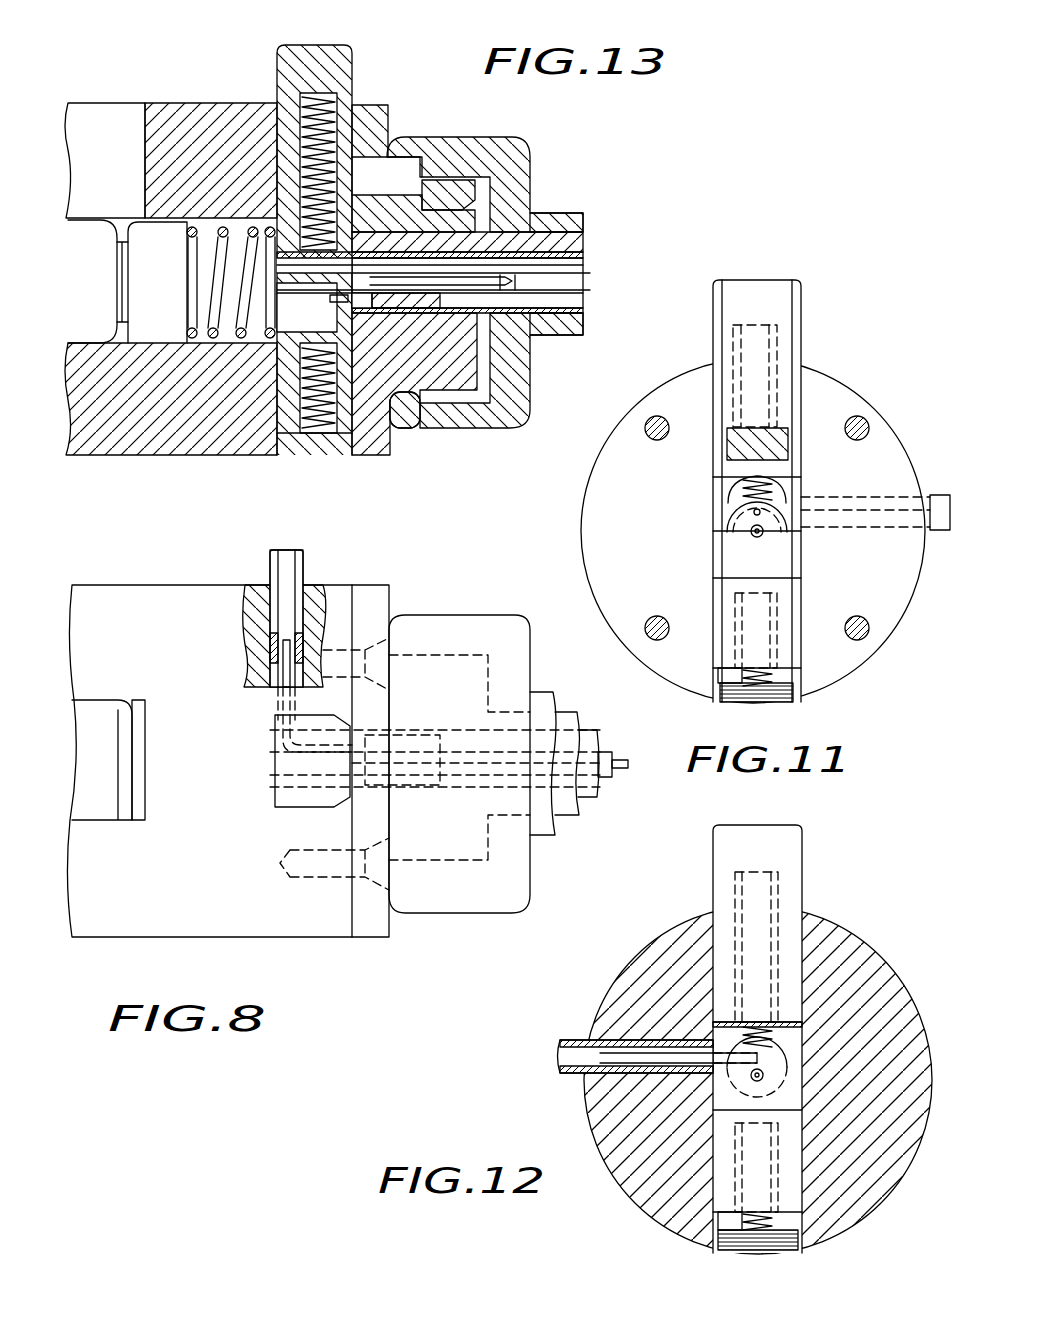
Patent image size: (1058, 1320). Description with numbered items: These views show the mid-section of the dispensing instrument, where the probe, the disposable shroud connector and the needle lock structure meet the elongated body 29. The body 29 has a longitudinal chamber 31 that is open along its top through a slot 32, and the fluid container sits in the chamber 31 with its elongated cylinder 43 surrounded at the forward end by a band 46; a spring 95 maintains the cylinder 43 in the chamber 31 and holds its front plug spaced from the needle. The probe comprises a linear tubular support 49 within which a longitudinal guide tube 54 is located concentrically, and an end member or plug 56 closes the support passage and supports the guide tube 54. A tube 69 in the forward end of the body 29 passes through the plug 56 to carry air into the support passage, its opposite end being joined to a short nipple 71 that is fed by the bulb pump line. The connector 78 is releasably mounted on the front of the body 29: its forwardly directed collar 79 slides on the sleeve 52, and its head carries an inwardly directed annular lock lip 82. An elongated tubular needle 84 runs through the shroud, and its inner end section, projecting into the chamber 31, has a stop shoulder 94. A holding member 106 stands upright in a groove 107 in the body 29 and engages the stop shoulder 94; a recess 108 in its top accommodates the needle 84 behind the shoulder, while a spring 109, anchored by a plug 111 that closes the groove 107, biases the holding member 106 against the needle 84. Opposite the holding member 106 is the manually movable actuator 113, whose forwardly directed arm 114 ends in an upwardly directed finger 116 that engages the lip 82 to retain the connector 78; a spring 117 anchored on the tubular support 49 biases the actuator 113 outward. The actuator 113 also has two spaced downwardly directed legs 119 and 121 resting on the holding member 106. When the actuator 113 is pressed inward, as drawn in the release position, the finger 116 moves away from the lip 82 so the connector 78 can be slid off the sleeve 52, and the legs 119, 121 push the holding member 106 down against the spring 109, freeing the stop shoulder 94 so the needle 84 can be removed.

In FIG. 13, the elongated body 29 is at (132, 440).
In FIG. 11, the elongated body 29 is at (882, 612).
In FIG. 8, the elongated body 29 is at (115, 598).
In FIG. 12, the elongated body 29 is at (868, 1193).
In FIG. 13, the longitudinal chamber 31 is at (120, 228).
In FIG. 13, the slot 32 is at (95, 115).
In FIG. 13, the elongated cylinder 43 is at (80, 275).
In FIG. 8, the elongated cylinder 43 is at (88, 712).
In FIG. 13, the band 46 is at (138, 232).
In FIG. 8, the band 46 is at (140, 787).
In FIG. 13, the linear tubular support 49 is at (579, 261).
In FIG. 8, the linear tubular support 49 is at (575, 735).
In FIG. 13, the sleeve 52 is at (577, 248).
In FIG. 8, the sleeve 52 is at (588, 800).
In FIG. 13, the longitudinal guide tube 54 is at (588, 297).
In FIG. 8, the longitudinal guide tube 54 is at (612, 760).
In FIG. 13, the end member or plug 56 is at (420, 308).
In FIG. 8, the end member or plug 56 is at (414, 745).
In FIG. 13, the tube 69 is at (322, 265).
In FIG. 8, the tube 69 is at (292, 682).
In FIG. 12, the tube 69 is at (705, 1062).
In FIG. 11, the nipple 71 is at (936, 494).
In FIG. 8, the nipple 71 is at (306, 563).
In FIG. 12, the nipple 71 is at (565, 1040).
In FIG. 13, the connector 78 is at (518, 133).
In FIG. 8, the connector 78 is at (489, 612).
In FIG. 13, the collar 79 is at (560, 225).
In FIG. 8, the collar 79 is at (545, 700).
In FIG. 13, the annular lock lip 82 is at (408, 400).
In FIG. 13, the tubular needle 84 is at (592, 281).
In FIG. 13, the stop shoulder 94 is at (522, 292).
In FIG. 11, the stop shoulder 94 is at (728, 520).
In FIG. 13, the spring 95 is at (215, 285).
In FIG. 11, the holding member 106 is at (740, 570).
In FIG. 13, the groove 107 is at (296, 443).
In FIG. 11, the groove 107 is at (726, 676).
In FIG. 12, the groove 107 is at (728, 1232).
In FIG. 13, the recess 108 is at (338, 300).
In FIG. 11, the recess 108 is at (763, 533).
In FIG. 13, the spring 109 is at (318, 440).
In FIG. 11, the spring 109 is at (775, 682).
In FIG. 12, the spring 109 is at (775, 1222).
In FIG. 11, the plug 111 is at (745, 702).
In FIG. 12, the plug 111 is at (768, 1252).
In FIG. 13, the manually movable actuator 113 is at (284, 50).
In FIG. 11, the manually movable actuator 113 is at (775, 300).
In FIG. 8, the manually movable actuator 113 is at (295, 803).
In FIG. 12, the manually movable actuator 113 is at (790, 855).
In FIG. 13, the forwardly directed arm 114 is at (375, 200).
In FIG. 11, the forwardly directed arm 114 is at (765, 440).
In FIG. 13, the upwardly directed finger 116 is at (437, 190).
In FIG. 13, the spring 117 is at (298, 100).
In FIG. 11, the spring 117 is at (777, 486).
In FIG. 12, the spring 117 is at (800, 1030).
In FIG. 12, the leg 119 is at (830, 1023).
In FIG. 12, the leg 121 is at (713, 1043).